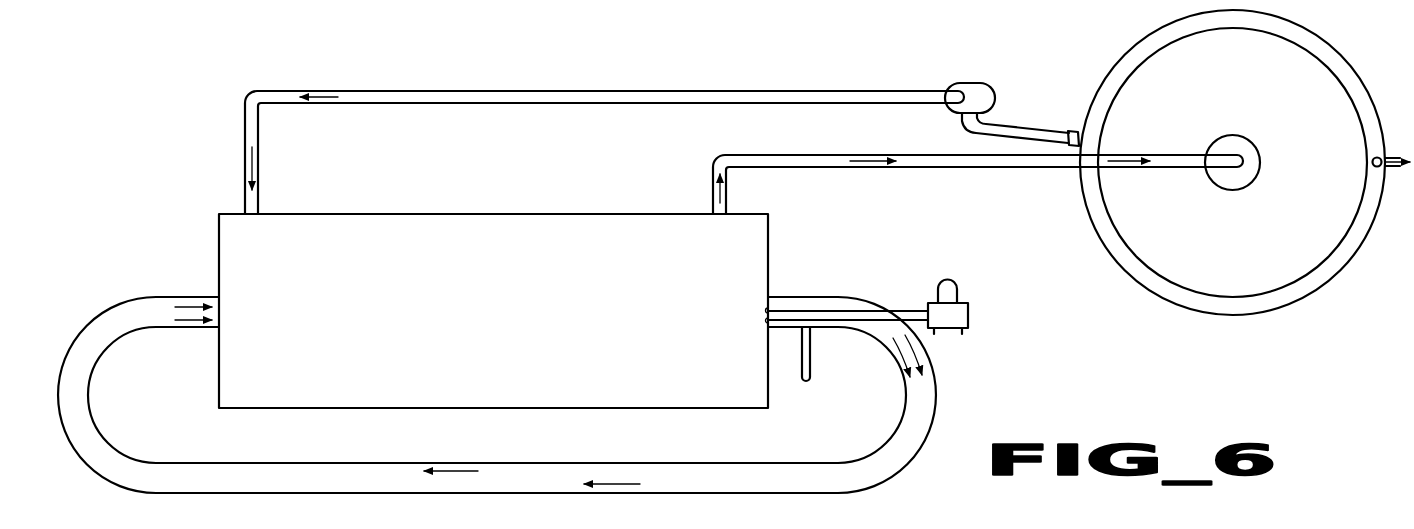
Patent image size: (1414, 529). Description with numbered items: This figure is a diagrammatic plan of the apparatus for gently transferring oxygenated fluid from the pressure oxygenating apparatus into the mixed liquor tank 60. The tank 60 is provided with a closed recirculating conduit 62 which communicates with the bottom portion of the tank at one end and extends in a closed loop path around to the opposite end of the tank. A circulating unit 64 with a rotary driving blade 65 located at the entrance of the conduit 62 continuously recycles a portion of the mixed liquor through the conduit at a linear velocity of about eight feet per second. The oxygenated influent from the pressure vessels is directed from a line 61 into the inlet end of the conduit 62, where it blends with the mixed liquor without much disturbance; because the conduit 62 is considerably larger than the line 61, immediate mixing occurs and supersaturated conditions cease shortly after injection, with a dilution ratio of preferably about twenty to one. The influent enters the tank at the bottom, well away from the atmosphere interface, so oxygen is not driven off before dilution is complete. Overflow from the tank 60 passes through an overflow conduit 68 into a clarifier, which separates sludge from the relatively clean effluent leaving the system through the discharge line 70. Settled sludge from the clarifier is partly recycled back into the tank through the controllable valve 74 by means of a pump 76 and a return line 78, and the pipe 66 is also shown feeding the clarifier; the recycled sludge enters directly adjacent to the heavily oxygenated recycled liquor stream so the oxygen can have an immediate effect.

The mixed liquor tank 60 is at (219, 257).
The line 61 is at (811, 370).
The closed recirculating conduit 62 is at (503, 487).
The circulating unit 64 is at (968, 315).
The rotary driving blade 65 is at (765, 306).
The supply conduit 66 is at (874, 168).
The overflow conduit 68 is at (1078, 174).
The discharge line 70 is at (1397, 153).
The controllable valve 74 is at (1069, 130).
The pump 76 is at (978, 83).
The return line 78 is at (543, 91).